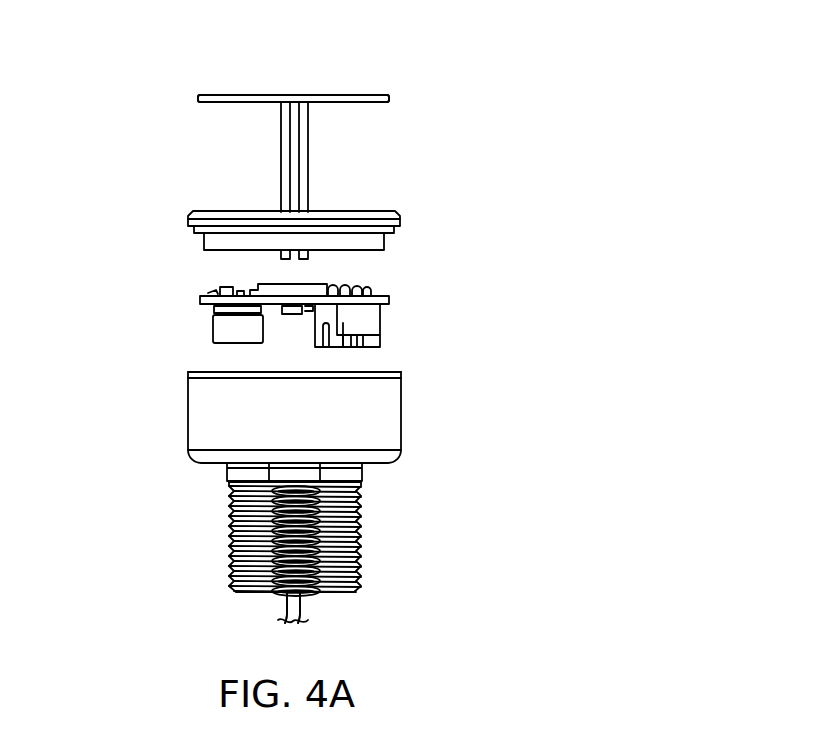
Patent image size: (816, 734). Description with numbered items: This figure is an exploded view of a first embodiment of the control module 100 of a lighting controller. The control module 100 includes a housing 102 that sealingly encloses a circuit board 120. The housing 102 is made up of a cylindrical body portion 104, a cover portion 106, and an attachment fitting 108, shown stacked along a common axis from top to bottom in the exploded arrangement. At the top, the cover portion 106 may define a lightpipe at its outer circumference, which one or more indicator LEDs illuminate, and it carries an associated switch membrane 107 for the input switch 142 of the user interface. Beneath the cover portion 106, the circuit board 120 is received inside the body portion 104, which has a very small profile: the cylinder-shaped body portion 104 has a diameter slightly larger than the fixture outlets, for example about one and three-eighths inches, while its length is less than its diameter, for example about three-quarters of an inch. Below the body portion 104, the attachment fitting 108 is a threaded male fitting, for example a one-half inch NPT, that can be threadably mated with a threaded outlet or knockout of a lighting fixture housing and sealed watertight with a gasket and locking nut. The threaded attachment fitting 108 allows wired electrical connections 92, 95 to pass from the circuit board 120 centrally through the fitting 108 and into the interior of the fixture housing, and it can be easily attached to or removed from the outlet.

The control module 100 is at (423, 78).
The switch membrane 107 is at (197, 98).
The input switch 142 is at (293, 153).
The cover portion 106 is at (187, 222).
The circuit board 120 is at (198, 300).
The housing 102 is at (187, 375).
The cylindrical body portion 104 is at (205, 422).
The attachment fitting 108 is at (228, 508).
The wired electrical connection 92 is at (284, 596).
The wired electrical connection 95 is at (292, 607).